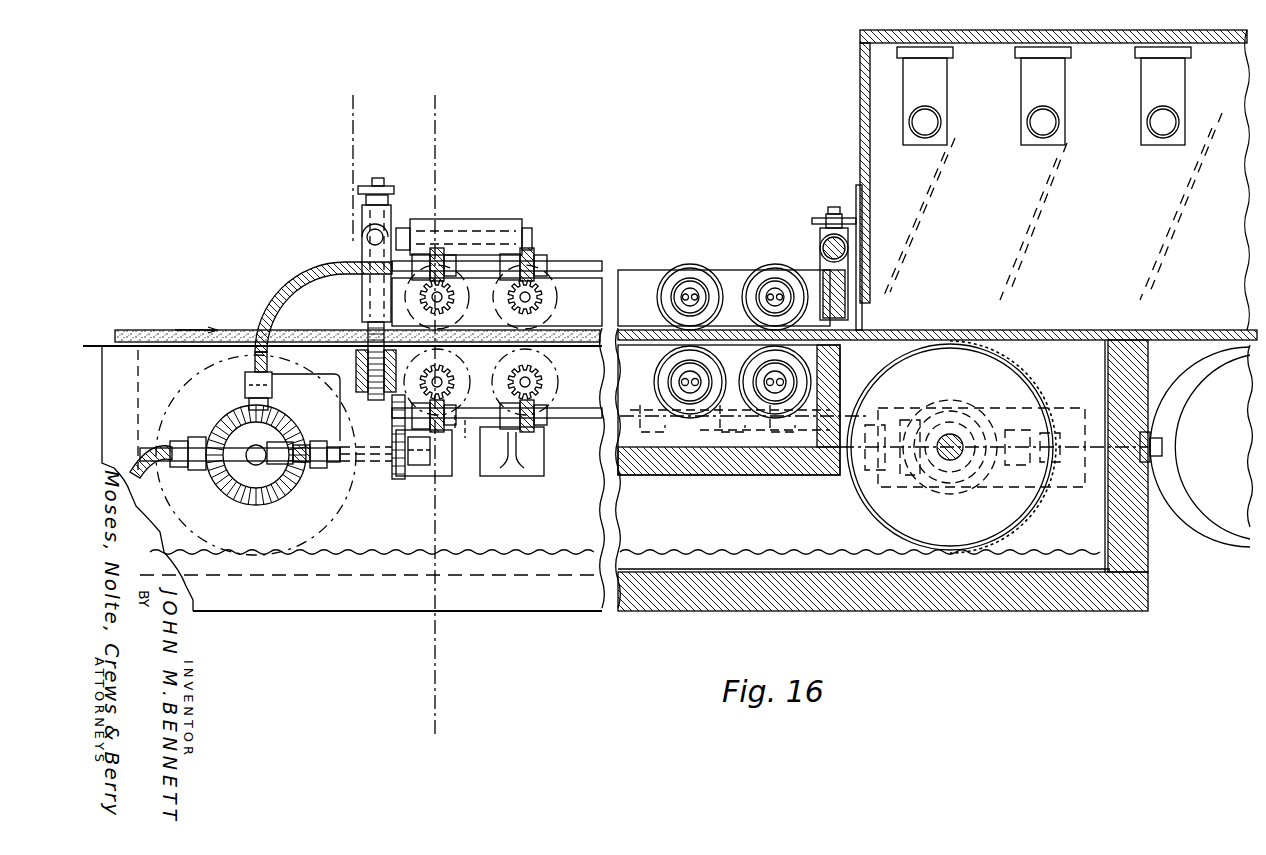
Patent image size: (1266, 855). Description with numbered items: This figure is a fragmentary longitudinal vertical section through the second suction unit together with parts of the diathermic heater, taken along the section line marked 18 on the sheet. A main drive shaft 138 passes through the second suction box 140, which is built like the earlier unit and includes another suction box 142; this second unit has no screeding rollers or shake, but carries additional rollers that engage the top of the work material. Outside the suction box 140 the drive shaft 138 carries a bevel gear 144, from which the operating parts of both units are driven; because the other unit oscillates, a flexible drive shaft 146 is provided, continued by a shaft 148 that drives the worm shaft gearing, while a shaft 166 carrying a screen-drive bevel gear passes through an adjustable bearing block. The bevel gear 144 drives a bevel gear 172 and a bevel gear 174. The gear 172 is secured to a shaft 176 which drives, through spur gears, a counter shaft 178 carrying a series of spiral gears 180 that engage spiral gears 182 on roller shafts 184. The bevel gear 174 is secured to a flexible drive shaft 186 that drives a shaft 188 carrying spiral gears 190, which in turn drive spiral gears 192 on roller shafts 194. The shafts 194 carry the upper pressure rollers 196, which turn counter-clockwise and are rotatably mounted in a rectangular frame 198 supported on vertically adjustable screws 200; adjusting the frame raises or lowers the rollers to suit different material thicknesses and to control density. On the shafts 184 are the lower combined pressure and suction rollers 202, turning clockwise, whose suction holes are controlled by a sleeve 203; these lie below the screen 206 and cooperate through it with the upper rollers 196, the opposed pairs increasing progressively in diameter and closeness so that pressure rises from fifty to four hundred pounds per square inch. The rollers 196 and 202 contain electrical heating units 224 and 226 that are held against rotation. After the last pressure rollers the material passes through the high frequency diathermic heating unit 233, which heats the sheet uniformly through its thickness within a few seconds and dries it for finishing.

The section line 18- 18 is at (426, 133).
The main drive shaft 138 is at (250, 444).
The second suction box 140 is at (631, 627).
The suction box 142 is at (790, 470).
The bevel gear 144 is at (258, 500).
The flexible drive shaft 146 is at (132, 445).
The shaft 148 is at (222, 468).
The shaft 166 is at (946, 462).
The bevel gear 172 is at (305, 466).
The bevel gear 174 is at (246, 386).
The shaft 176 is at (398, 480).
The counter shaft 178 is at (476, 440).
The spiral gears 180 is at (448, 478).
The spiral gears 182 is at (450, 375).
The roller shafts 184 is at (388, 393).
The flexible drive shaft 186 is at (290, 283).
The shaft 188 is at (490, 258).
The spiral gears 190 is at (438, 258).
The spiral gears 192 is at (400, 302).
The roller shafts 194 is at (545, 290).
The upper pressure rollers 196 is at (608, 300).
The rectangular frame 198 is at (818, 272).
The vertically adjustable screws 200 is at (362, 216).
The lower combined pressure and suction rollers 202 is at (580, 418).
The sleeve 203 is at (740, 428).
The screen 206 is at (175, 400).
The electrical heating unit 224 is at (692, 285).
The electrical heating unit 226 is at (660, 378).
The high frequency diathermic heating unit 233 is at (1050, 30).